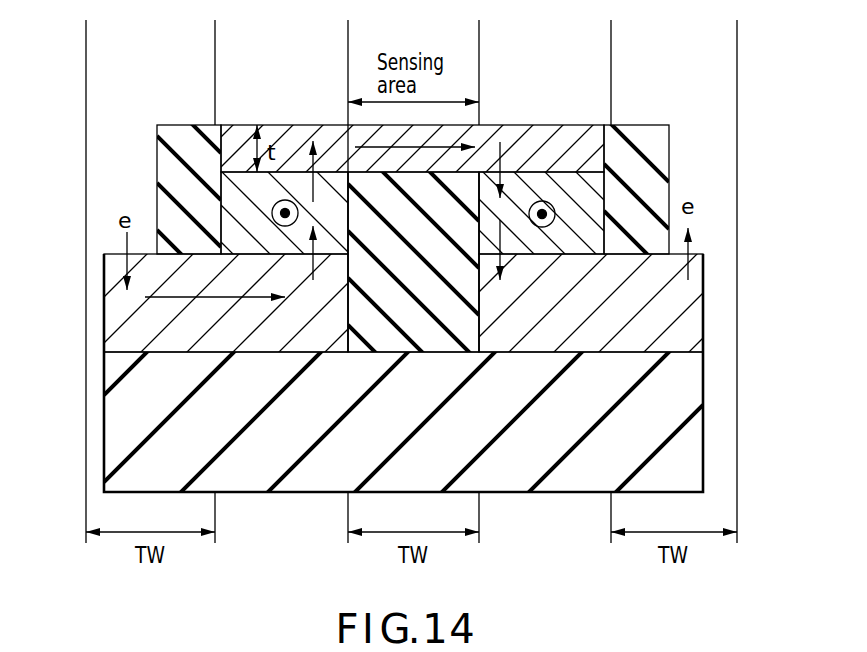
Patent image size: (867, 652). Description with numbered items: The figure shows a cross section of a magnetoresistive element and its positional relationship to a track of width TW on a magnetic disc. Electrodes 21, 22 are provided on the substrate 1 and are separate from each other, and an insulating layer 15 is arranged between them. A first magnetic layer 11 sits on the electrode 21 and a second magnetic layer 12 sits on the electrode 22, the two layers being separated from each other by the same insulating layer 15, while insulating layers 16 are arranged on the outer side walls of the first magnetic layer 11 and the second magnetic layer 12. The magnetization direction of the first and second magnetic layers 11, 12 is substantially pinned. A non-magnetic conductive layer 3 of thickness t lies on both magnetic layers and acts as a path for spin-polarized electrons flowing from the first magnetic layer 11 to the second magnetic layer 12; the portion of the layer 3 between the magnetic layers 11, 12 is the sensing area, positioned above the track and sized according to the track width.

The substrate 1 is at (703, 418).
The non-magnetic conductive layer 3 is at (543, 143).
The first magnetic layer 11 is at (237, 182).
The second magnetic layer 12 is at (597, 192).
The insulating layer 15 is at (365, 188).
The insulating layers 16 is at (157, 170).
The electrode 21 is at (104, 300).
The electrode 22 is at (703, 318).